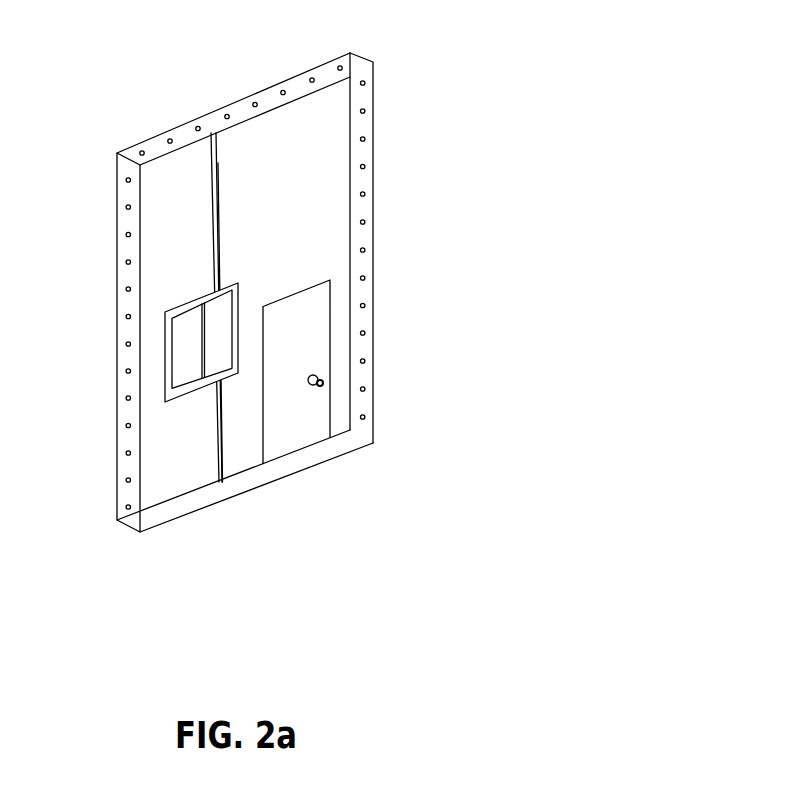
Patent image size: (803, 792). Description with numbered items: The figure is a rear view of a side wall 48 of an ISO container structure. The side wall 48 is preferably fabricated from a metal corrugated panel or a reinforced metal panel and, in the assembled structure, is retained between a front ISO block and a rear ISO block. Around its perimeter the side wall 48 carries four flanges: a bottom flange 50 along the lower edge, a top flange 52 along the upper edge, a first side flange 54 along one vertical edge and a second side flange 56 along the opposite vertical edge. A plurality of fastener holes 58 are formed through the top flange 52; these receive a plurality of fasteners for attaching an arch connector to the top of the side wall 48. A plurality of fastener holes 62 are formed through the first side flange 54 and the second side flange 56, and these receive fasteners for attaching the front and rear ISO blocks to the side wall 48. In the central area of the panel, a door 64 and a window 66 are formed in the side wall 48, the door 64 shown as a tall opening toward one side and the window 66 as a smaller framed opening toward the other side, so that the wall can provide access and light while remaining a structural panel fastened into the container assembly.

The side wall 48 is at (263, 306).
The bottom flange 50 is at (210, 498).
The top flange 52 is at (295, 87).
The first side flange 54 is at (127, 277).
The second side flange 56 is at (367, 152).
The fastener holes 58 is at (198, 128).
The fastener holes 62 is at (130, 206).
The door 64 is at (310, 423).
The window 66 is at (164, 368).